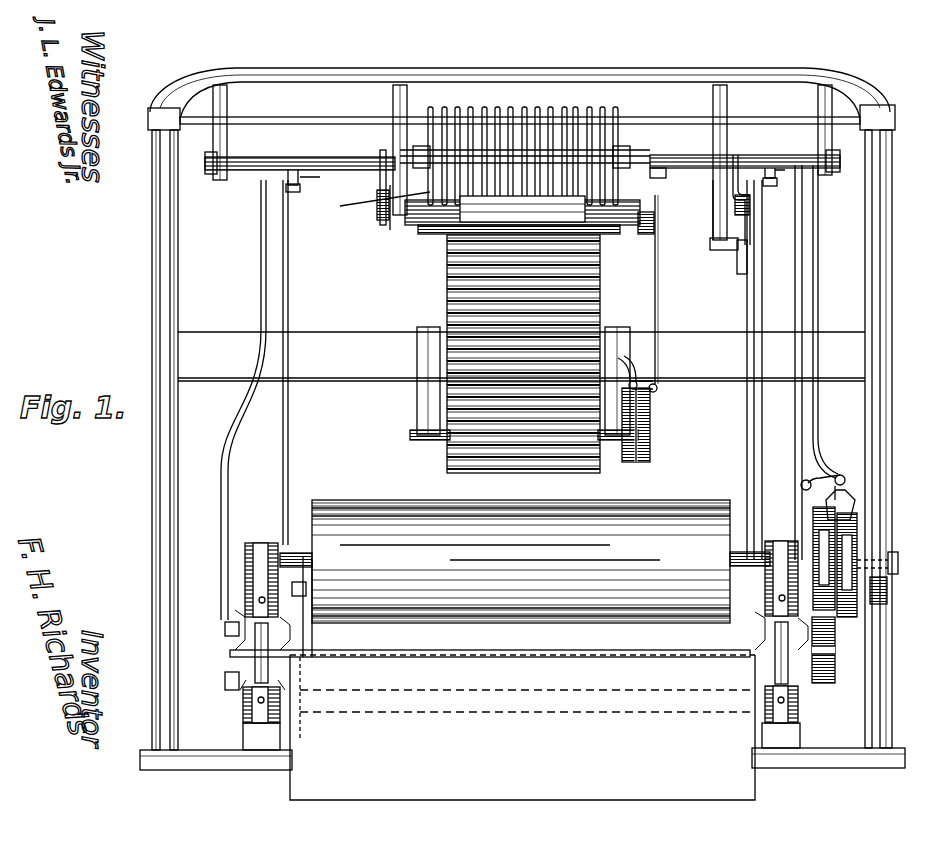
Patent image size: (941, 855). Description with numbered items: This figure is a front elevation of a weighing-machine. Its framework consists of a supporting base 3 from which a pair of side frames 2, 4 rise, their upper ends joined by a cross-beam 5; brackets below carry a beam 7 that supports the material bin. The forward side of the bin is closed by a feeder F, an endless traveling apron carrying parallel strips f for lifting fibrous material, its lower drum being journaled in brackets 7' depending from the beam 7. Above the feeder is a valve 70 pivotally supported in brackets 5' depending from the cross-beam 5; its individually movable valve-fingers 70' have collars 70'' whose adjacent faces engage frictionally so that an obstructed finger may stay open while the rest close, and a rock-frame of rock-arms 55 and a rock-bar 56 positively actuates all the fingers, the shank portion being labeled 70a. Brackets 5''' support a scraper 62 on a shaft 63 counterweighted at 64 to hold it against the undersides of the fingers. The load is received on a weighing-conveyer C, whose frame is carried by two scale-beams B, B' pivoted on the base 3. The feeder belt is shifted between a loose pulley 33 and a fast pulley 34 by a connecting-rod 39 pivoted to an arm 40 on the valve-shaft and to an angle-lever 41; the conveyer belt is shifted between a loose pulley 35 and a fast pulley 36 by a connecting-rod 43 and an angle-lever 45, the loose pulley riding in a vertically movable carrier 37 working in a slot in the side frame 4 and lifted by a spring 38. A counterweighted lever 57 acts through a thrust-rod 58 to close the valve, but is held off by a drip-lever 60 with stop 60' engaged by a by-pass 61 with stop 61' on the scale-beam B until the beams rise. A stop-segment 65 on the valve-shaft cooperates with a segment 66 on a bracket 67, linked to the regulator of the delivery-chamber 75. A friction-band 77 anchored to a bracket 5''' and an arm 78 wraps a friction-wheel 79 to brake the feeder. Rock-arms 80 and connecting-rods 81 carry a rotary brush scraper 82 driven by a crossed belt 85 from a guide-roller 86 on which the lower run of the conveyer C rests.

The side frame 2 is at (160, 458).
The supporting base 3 is at (220, 758).
The side frame 4 is at (880, 292).
The cross-beam 5 is at (520, 81).
The brackets 5' is at (533, 132).
The brackets 5''' is at (544, 167).
The beam 7 is at (521, 356).
The brackets 7' is at (529, 383).
The loose pulley 33 is at (646, 462).
The fast pulley 34 is at (628, 462).
The loose pulley 35 is at (845, 546).
The fast pulley 36 is at (813, 522).
The vertically-movable carrier 37 is at (898, 562).
The spring 38 is at (876, 604).
The connecting-rod 39 is at (657, 332).
The arm 40 is at (662, 178).
The angle-lever 41 is at (648, 384).
The connecting-rod 43 is at (818, 300).
The angle-lever 45 is at (856, 490).
The rock-arms 55 is at (408, 150).
The rock-bar 56 is at (640, 222).
The counterweighted lever 57 is at (838, 672).
The thrust-rod 58 is at (795, 300).
The drip-lever 60 is at (240, 400).
The stop 60' is at (211, 651).
The by-pass stop 61 is at (212, 682).
The stop 61' is at (213, 626).
The scraper 62 is at (440, 225).
The shaft 63 is at (418, 230).
The counterweight 64 is at (490, 210).
The stop-segment 65 is at (735, 182).
The segment 66 is at (737, 260).
The bracket 67 is at (713, 203).
The valve 70 is at (525, 143).
The valve-fingers 70' is at (525, 72).
The collars 70'' is at (603, 101).
The comb arm 70a is at (388, 196).
The delivery-chamber 75 is at (522, 727).
The friction-band 77 is at (382, 220).
The arm 78 is at (384, 198).
The friction-wheel 79 is at (380, 205).
The rock-arms 80 is at (298, 180).
The connecting-rods 81 is at (288, 452).
The scraper 82 is at (528, 650).
The crossed belt 85 is at (316, 645).
The guide-roller 86 is at (306, 586).
The scale-beam B is at (792, 644).
The scale-beam B' is at (281, 646).
The weighing-conveyer C is at (521, 561).
The feeder F is at (512, 354).
The strips f is at (604, 290).